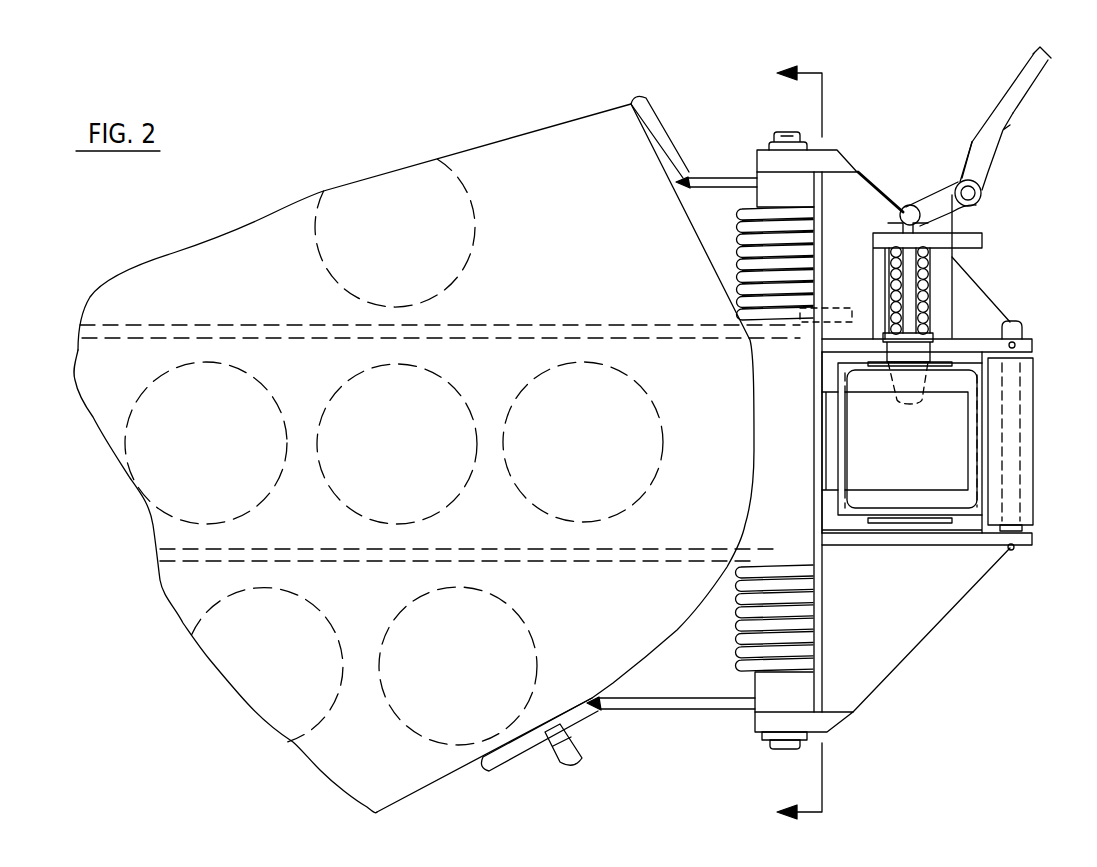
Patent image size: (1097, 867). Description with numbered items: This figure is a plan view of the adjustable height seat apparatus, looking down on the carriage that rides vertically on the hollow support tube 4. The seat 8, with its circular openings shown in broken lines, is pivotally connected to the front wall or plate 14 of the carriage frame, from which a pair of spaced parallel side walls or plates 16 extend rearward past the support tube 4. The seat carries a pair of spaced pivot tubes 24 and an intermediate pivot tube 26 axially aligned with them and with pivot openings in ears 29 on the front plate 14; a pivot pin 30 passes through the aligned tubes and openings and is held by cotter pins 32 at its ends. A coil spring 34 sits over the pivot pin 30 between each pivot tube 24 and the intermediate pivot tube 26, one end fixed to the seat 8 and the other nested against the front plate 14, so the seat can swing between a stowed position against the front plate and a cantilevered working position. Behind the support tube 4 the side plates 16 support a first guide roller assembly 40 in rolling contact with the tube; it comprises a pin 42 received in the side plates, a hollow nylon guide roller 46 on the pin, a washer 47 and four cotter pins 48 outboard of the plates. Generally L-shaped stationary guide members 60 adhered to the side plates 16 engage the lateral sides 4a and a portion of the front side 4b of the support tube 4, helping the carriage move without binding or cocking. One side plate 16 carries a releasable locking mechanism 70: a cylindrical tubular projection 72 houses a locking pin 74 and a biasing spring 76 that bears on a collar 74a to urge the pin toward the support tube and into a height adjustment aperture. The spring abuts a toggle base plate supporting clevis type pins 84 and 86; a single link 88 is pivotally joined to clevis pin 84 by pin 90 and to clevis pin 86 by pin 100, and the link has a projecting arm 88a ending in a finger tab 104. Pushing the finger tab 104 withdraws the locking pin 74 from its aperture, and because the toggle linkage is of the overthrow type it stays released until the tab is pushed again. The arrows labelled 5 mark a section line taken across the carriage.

The hollow support tube 4 is at (965, 537).
The lateral sides of support tube 4a is at (881, 512).
The front side of support tube 4b is at (845, 438).
The section line 5 is at (800, 443).
The seat 8 is at (550, 273).
The front wall or plate 14 is at (824, 697).
The side walls or plates 16 is at (967, 337).
The pivot tubes 24 is at (773, 190).
The intermediate pivot tube 26 is at (727, 573).
The ears 29 is at (834, 160).
The pivot pin 30 is at (790, 741).
The cotter pins 32 is at (760, 737).
The coil spring 34 is at (747, 253).
The first guide roller assembly 40 is at (1043, 505).
The pin 42 is at (1013, 323).
The hollow nylon guide roller 46 is at (1022, 421).
The washer 47 is at (999, 334).
The cotter pins 48 is at (1026, 340).
The L-shaped stationary guide members 60 is at (830, 377).
The releasable locking mechanism 70 is at (940, 88).
The cylindrical tubular projection 72 is at (954, 257).
The locking pin 74 is at (913, 403).
The collar 74a is at (893, 327).
The biasing spring 76 is at (886, 283).
The clevis type pin 84 is at (901, 210).
The clevis type pin 86 is at (977, 216).
The link 88 is at (943, 197).
The projecting arm 88a is at (1017, 113).
The pin 90 is at (978, 205).
The pin 100 is at (961, 175).
The finger tab 104 is at (1018, 77).